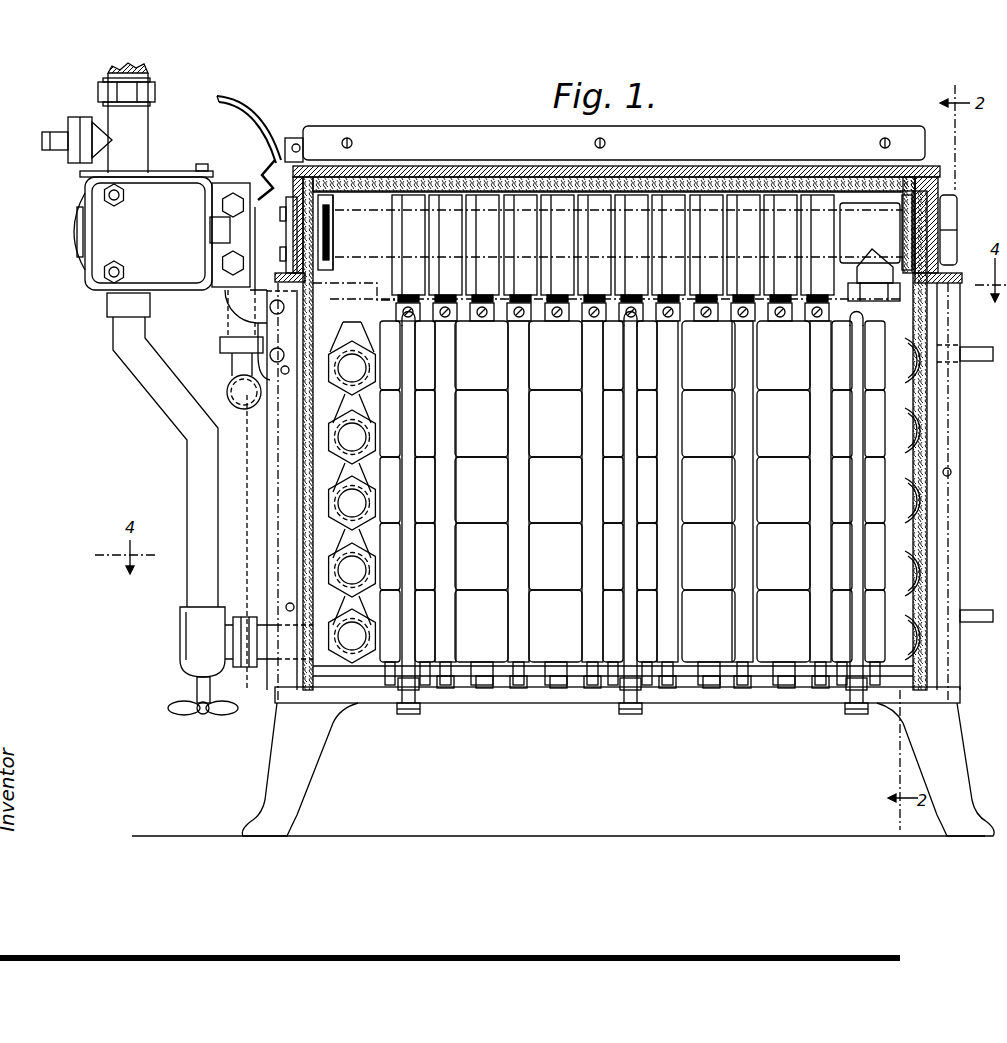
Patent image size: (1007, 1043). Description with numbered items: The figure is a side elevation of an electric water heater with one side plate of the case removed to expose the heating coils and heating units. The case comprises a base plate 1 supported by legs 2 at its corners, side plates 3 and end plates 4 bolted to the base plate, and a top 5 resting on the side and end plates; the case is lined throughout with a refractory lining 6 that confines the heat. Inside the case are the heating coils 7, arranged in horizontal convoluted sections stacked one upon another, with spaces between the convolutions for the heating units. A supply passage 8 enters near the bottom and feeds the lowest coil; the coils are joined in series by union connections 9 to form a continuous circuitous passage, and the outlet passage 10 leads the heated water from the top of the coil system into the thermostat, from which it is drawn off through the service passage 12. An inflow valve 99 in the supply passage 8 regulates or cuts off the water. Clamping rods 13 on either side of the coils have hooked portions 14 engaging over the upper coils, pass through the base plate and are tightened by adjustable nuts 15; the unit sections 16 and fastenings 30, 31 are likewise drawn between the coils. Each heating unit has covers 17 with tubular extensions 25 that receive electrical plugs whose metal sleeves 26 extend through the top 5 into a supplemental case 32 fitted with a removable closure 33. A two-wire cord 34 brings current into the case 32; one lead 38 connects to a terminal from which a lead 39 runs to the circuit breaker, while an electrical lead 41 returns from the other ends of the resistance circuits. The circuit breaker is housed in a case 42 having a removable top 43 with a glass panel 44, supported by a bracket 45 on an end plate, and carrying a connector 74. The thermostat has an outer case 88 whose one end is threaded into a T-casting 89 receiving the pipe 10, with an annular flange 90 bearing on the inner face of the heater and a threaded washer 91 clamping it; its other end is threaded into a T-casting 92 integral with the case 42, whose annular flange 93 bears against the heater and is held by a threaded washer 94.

The base plate 1 is at (700, 702).
The legs 2 is at (618, 769).
The side plates 3 is at (613, 429).
The end plates 4 is at (620, 491).
The top 5 is at (920, 170).
The lining 6 is at (940, 180).
The heating coils 7 is at (427, 420).
The supply passage 8 is at (140, 124).
The union connections 9 is at (624, 492).
The outlet passage 10 is at (874, 290).
The service passage 12 is at (244, 392).
The clamping rods 13 is at (410, 483).
The hooked portions 14 is at (404, 313).
The adjustable nuts 15 is at (412, 713).
The cell sections 16 is at (632, 503).
The covers 17 is at (410, 322).
The tubular extensions 25 is at (470, 296).
The metal sleeve 26 is at (414, 216).
The neck nuts 30 is at (484, 700).
The lower rail 31 is at (548, 700).
The supplemental case 32 is at (775, 165).
The removable closure 33 is at (835, 135).
The two-wire cord 34 is at (256, 112).
The lead 38 is at (195, 684).
The lead 39 is at (266, 248).
The electrical lead 41 is at (254, 160).
The case 42 is at (143, 233).
The removable top 43 is at (208, 167).
The glass panel 44 is at (180, 171).
The bracket 45 is at (245, 335).
The connector 74 is at (210, 232).
The outer case 88 is at (361, 232).
The T-casting 89 is at (870, 233).
The annular flange 90 is at (905, 215).
The threaded washer 91 is at (957, 225).
The T-casting 92 is at (289, 229).
The annular flange 93 is at (279, 235).
The threaded washer 94 is at (333, 237).
The inflow valve 99 is at (52, 147).